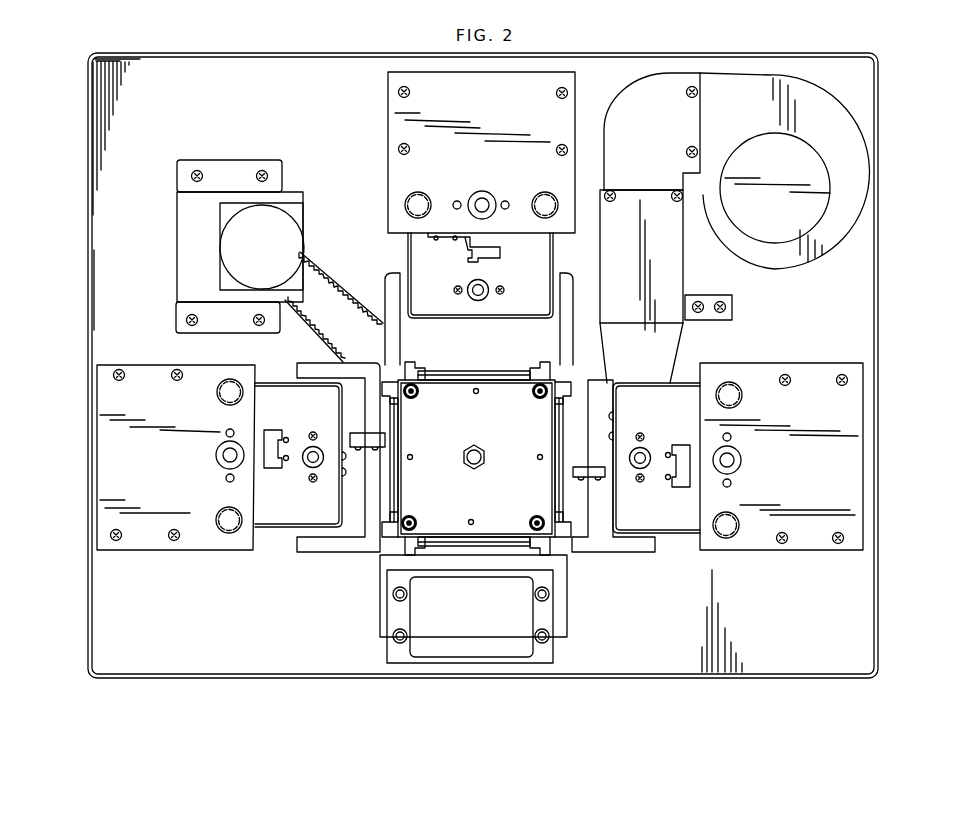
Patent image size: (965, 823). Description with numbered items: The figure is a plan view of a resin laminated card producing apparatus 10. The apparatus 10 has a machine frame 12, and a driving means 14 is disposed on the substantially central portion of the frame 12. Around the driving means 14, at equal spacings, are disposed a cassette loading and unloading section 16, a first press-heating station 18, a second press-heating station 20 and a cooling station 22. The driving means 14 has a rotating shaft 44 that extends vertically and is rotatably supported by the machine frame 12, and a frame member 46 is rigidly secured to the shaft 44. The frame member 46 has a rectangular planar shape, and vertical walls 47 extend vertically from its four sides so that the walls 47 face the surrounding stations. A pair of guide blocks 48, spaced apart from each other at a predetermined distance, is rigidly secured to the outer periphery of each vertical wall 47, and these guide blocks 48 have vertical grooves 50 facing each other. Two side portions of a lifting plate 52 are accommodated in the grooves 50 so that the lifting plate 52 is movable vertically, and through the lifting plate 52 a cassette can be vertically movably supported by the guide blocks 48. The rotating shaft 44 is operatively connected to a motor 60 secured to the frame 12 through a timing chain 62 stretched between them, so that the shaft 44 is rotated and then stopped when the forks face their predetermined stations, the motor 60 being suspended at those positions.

The resin laminated card producing apparatus 10 is at (901, 372).
The machine frame 12 is at (104, 625).
The driving means 14 is at (394, 546).
The cassette loading and unloading section 16 is at (577, 616).
The first press-heating station 18 is at (262, 552).
The second press-heating station 20 is at (393, 248).
The cooling station 22 is at (839, 493).
The rotating shaft 44 is at (485, 457).
The frame member 46 is at (532, 446).
The vertical walls 47 is at (437, 381).
The guide blocks 48 is at (420, 367).
The vertical grooves 50 is at (433, 373).
The lifting plate 52 is at (471, 376).
The motor 60 is at (274, 221).
The timing chain 62 is at (358, 292).